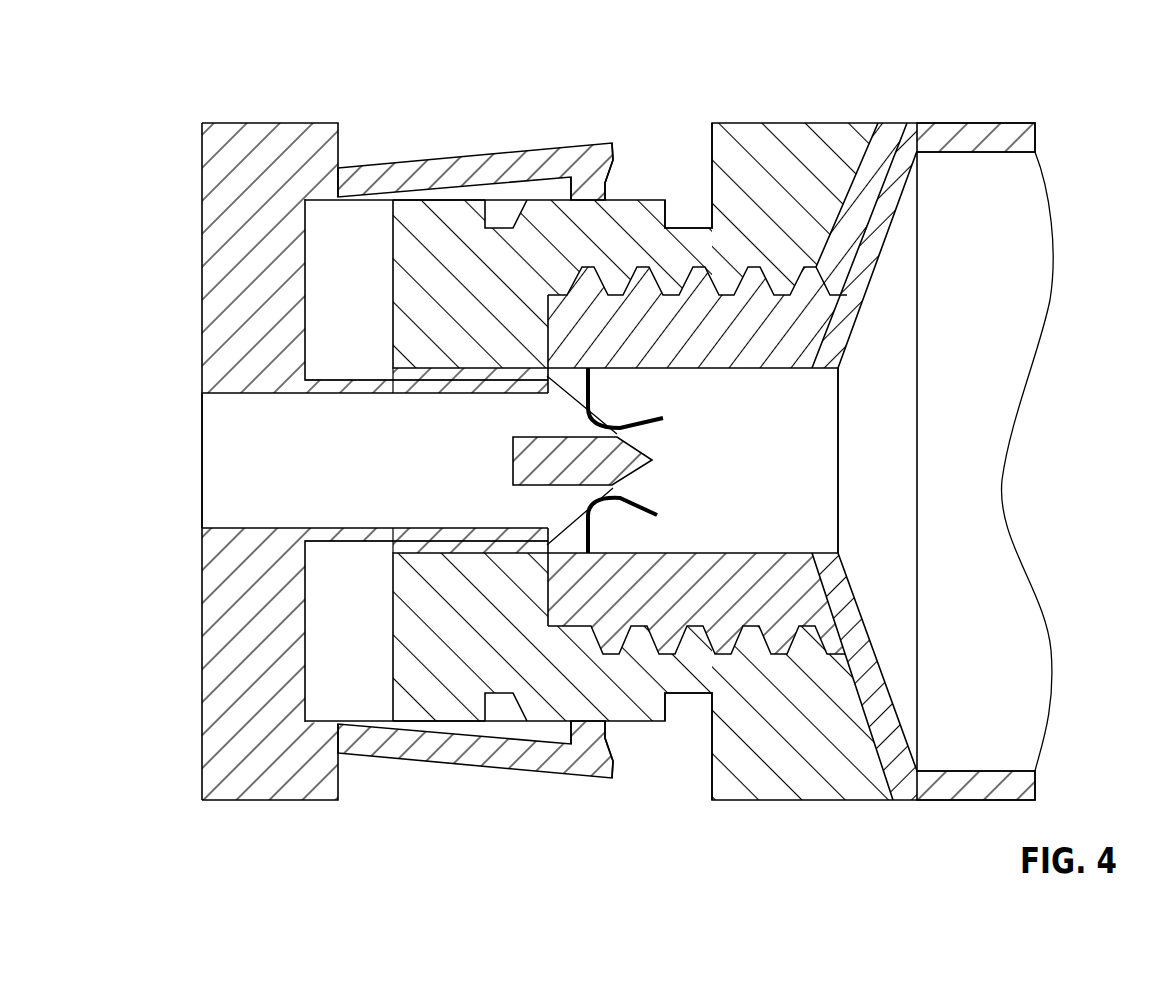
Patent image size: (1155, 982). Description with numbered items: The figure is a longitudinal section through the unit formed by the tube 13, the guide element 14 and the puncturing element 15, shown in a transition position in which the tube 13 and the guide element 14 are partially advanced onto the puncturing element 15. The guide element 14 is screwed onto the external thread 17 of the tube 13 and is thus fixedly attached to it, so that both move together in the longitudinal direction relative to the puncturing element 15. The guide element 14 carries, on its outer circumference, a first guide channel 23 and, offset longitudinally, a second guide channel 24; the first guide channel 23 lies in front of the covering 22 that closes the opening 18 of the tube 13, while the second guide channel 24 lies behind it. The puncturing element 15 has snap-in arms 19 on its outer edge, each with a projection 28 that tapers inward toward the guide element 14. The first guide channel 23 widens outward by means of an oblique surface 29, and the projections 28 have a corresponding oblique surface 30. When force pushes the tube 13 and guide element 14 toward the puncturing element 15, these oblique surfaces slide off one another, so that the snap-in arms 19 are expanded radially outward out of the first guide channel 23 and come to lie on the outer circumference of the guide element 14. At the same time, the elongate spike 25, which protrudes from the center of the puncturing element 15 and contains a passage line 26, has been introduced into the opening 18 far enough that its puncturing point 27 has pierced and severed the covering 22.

The tube 13 is at (1000, 137).
The guide element 14 is at (652, 207).
The puncturing element 15 is at (242, 147).
The external thread 17 is at (826, 290).
The opening 18 is at (807, 413).
The snap-in arms 19 is at (388, 183).
The covering 22 is at (653, 512).
The first guide channel 23 is at (482, 193).
The second guide channel 24 is at (688, 217).
The spike 25 is at (443, 540).
The passage line 26 is at (245, 441).
The puncturing point 27 is at (610, 462).
The projections 28 is at (583, 745).
The oblique surface 29 is at (527, 205).
The oblique surface 30 is at (612, 183).